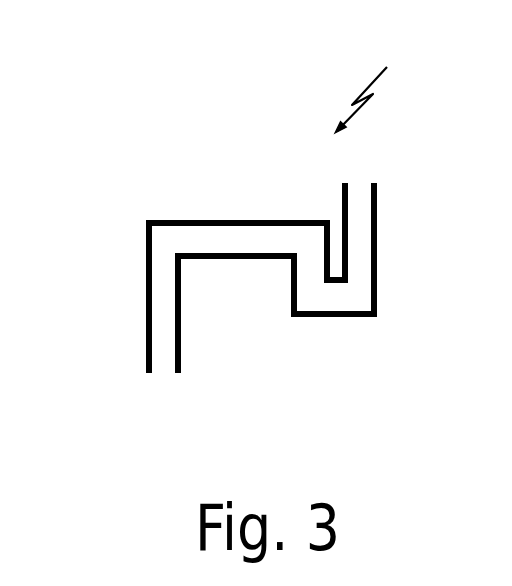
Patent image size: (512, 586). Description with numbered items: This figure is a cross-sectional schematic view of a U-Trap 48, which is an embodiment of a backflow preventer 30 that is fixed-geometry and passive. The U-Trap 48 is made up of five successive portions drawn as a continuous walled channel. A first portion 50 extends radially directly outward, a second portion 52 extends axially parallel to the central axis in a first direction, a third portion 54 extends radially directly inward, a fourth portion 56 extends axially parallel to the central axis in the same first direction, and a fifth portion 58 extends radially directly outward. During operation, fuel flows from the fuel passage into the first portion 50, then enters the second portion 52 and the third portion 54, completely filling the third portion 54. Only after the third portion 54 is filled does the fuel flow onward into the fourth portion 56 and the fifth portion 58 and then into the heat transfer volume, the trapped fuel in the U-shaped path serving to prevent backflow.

The backflow preventer 30 is at (376, 83).
The U-Trap 48 is at (375, 260).
The first portion 50 is at (158, 358).
The second portion 52 is at (222, 235).
The third portion 54 is at (308, 282).
The fourth portion 56 is at (338, 298).
The fifth portion 58 is at (360, 218).